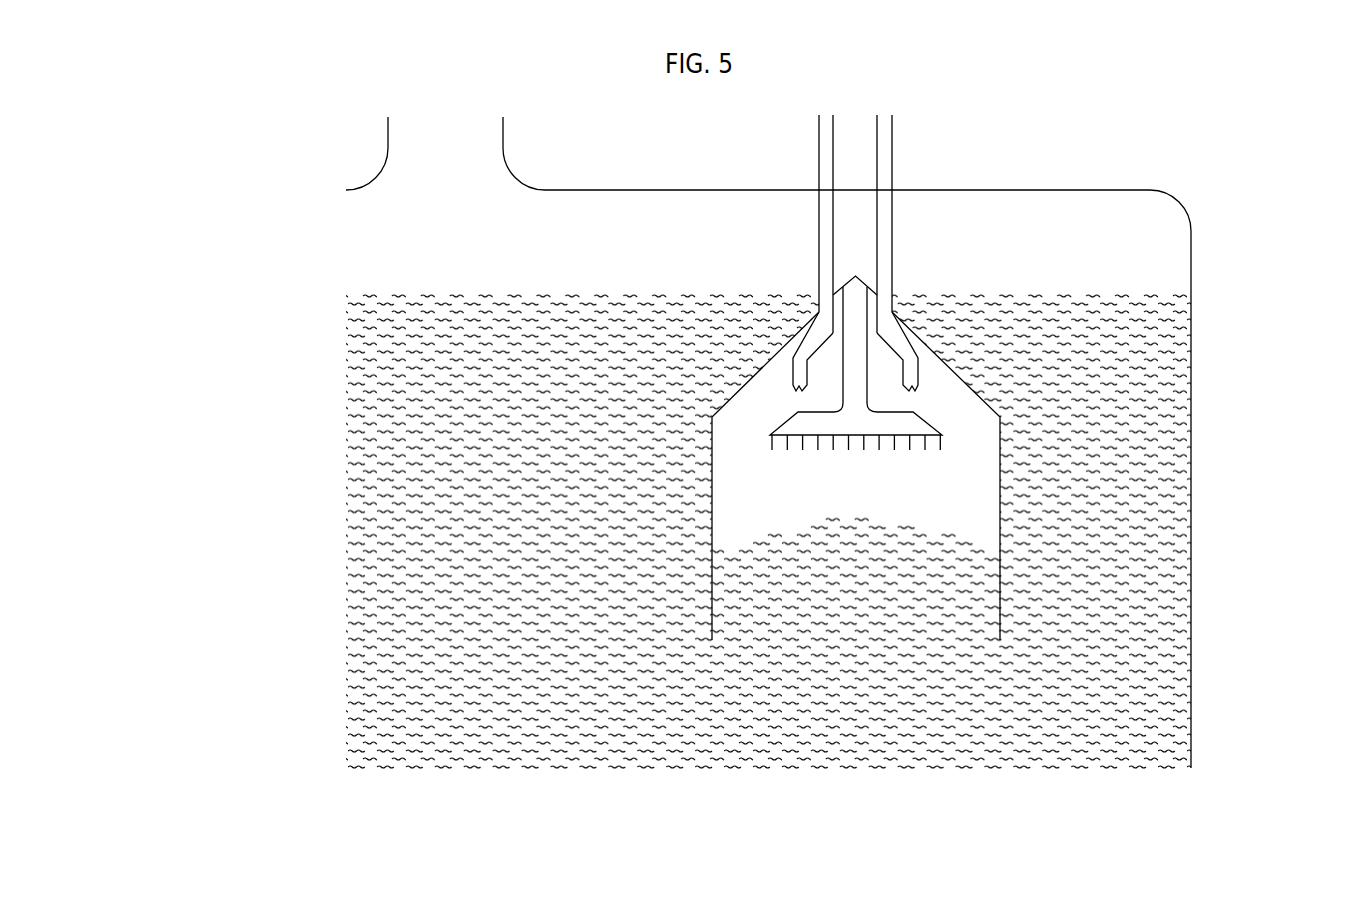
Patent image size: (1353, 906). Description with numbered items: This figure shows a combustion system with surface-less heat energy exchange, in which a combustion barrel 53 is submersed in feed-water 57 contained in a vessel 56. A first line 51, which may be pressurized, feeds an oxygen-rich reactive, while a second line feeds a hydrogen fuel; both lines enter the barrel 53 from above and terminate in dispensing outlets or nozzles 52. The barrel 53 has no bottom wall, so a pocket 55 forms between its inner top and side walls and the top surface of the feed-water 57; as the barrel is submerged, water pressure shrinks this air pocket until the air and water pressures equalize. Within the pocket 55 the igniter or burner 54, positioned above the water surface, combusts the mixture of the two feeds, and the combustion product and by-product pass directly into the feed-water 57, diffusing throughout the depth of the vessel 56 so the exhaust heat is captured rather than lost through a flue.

The first line 51 is at (805, 120).
The outlets/nozzle 52 is at (918, 387).
The combustion barrel 53 is at (947, 353).
The burner 54 is at (950, 432).
The pocket 55 is at (918, 503).
The vessel 56 is at (1191, 625).
The feed-water 57 is at (487, 425).